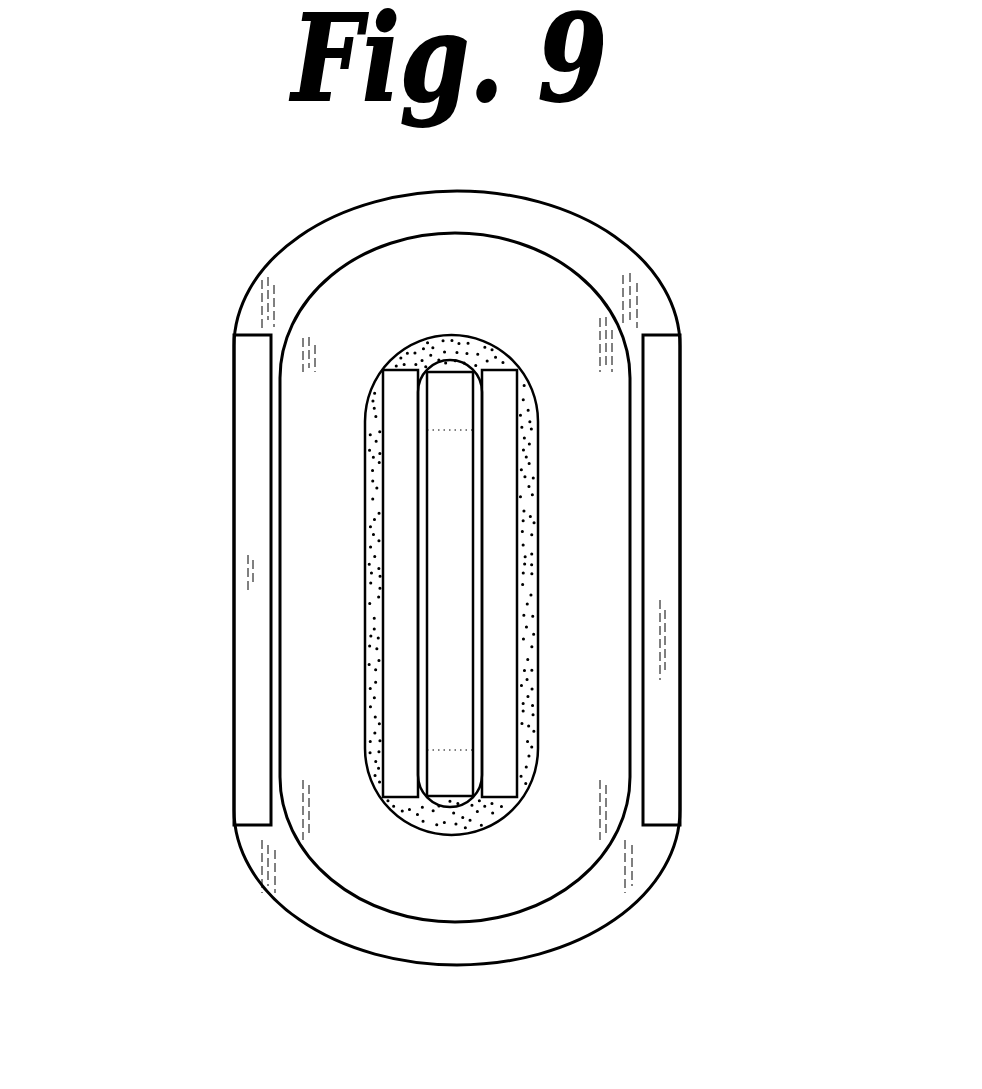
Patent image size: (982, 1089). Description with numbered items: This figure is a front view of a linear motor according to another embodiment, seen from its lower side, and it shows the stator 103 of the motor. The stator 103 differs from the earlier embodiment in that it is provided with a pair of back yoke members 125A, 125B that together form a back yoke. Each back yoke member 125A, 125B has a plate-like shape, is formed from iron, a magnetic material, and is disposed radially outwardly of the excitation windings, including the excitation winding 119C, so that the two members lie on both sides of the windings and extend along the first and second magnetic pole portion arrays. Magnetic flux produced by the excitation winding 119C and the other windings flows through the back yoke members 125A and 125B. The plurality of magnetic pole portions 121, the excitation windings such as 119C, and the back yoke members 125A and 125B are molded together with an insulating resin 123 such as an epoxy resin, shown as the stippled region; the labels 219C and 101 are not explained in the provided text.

The magnet 101 is at (455, 428).
The stator 103 is at (222, 328).
The excitation winding 119C is at (323, 325).
The magnetic pole portion 121 is at (400, 493).
The insulating resin 123 is at (487, 813).
The back yoke member 125A is at (236, 576).
The back yoke member 125B is at (681, 630).
The second core 219C is at (372, 867).